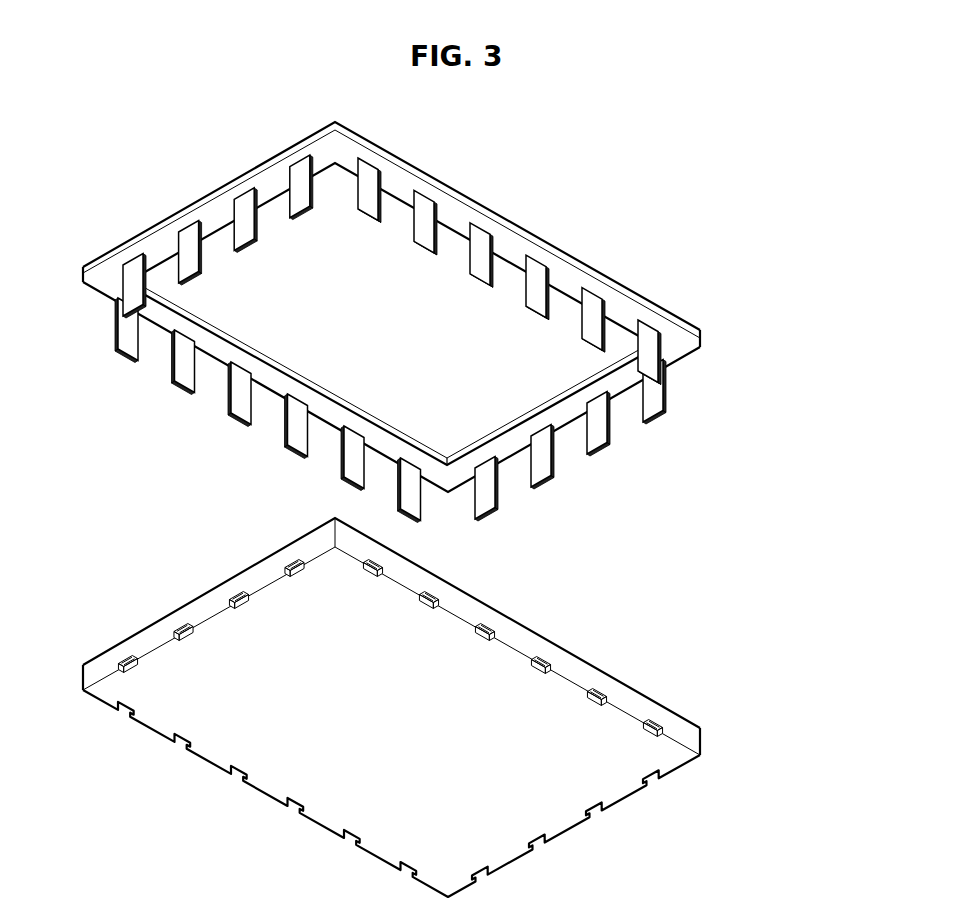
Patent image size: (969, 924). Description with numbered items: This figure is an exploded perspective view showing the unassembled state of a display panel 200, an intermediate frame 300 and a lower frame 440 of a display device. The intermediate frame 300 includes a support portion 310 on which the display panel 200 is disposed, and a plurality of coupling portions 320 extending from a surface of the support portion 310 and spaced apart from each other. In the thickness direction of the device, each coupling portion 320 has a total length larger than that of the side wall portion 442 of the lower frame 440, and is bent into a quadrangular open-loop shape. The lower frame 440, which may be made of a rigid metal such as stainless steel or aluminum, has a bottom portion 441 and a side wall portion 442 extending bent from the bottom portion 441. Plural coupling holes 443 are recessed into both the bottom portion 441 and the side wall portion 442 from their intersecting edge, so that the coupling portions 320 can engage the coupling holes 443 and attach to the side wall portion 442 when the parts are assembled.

The display panel 200 is at (448, 252).
The intermediate frame 300 is at (456, 338).
The support portion 310 is at (675, 353).
The coupling portion 320 is at (657, 402).
The lower frame 440 is at (456, 707).
The bottom portion 441 is at (620, 785).
The side wall portion 442 is at (673, 720).
The coupling hole 443 is at (602, 692).